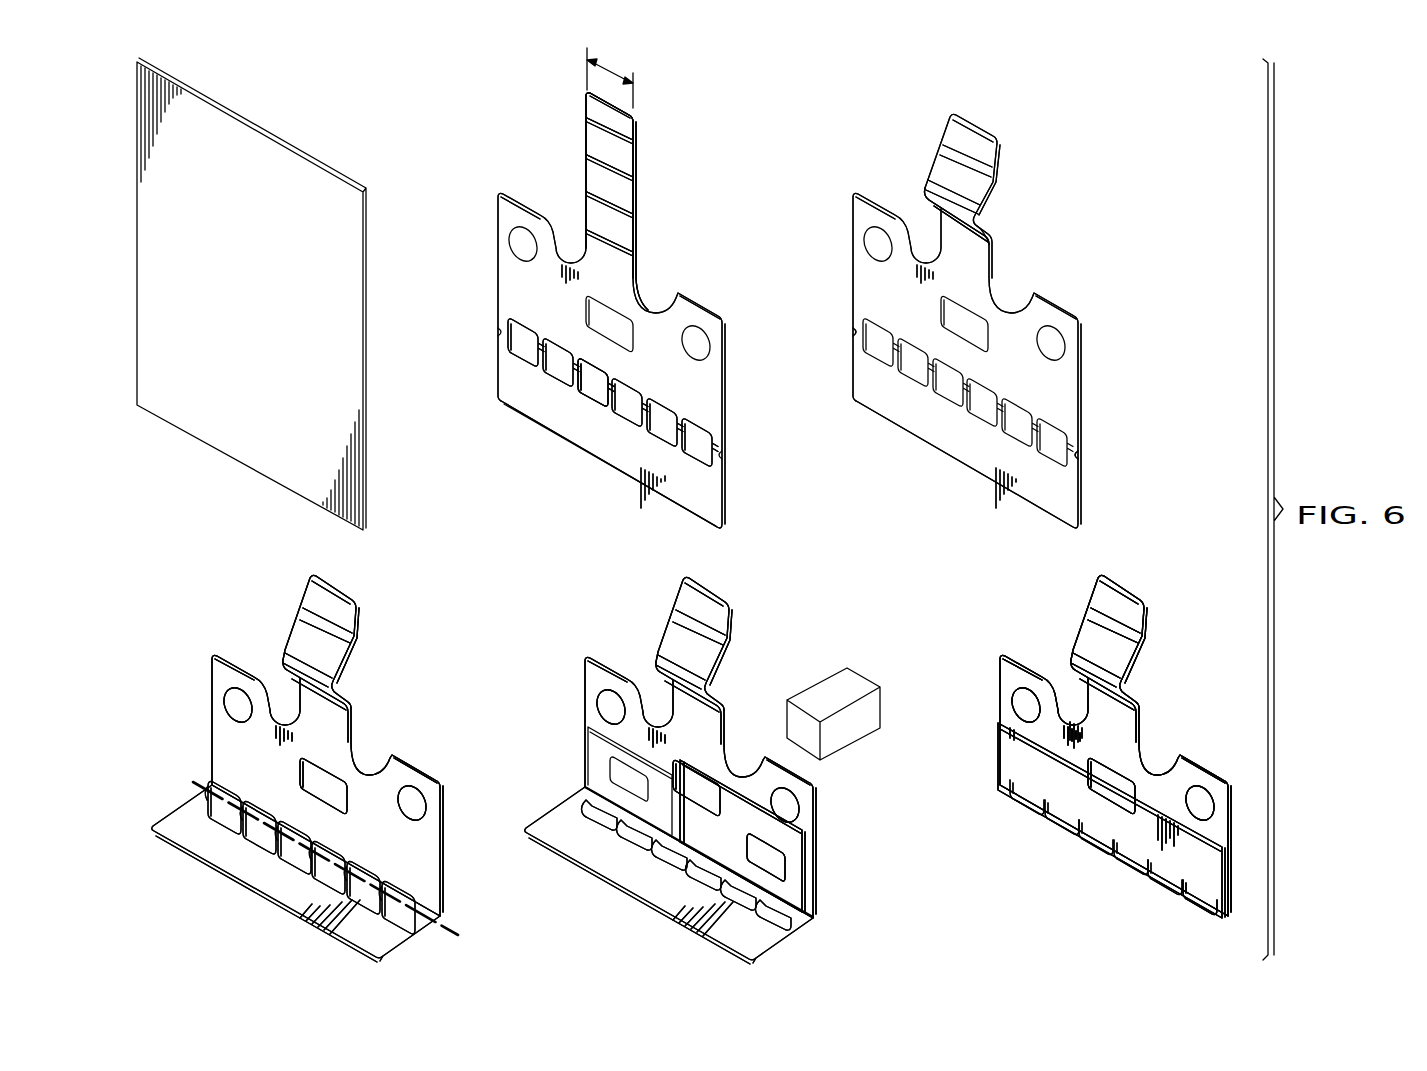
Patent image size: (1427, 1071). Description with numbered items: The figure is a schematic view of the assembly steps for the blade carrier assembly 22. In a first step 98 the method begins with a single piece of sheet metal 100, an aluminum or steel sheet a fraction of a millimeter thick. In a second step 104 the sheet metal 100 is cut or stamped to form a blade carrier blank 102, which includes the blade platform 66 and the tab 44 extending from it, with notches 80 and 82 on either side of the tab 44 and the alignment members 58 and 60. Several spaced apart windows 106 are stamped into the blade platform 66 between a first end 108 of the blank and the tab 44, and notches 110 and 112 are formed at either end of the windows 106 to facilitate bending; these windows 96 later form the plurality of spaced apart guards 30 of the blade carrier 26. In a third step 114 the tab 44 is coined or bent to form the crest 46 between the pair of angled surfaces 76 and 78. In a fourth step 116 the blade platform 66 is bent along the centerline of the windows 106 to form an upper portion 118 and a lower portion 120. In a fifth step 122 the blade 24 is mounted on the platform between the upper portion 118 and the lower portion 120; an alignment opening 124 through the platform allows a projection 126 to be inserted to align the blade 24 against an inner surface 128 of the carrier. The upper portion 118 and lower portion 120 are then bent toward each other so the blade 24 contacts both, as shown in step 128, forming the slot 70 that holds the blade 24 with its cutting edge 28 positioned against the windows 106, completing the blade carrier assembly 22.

The blade carrier assembly 22 is at (1093, 770).
The blade 24 is at (800, 893).
The blade carrier 26 is at (1005, 740).
The cutting edge 28 is at (633, 838).
The spaced apart guards 30 is at (557, 370).
The tab 44 is at (595, 160).
The crest 46 is at (980, 226).
The alignment member 58 is at (523, 246).
The alignment member 60 is at (692, 356).
The blade platform 66 is at (500, 270).
The slot 70 is at (1235, 895).
The angled surface 76 is at (950, 146).
The angled surface 78 is at (930, 198).
The notch 80 is at (556, 210).
The notch 82 is at (661, 272).
The windows 96 is at (1042, 838).
The first step 98 is at (256, 468).
The sheet metal 100 is at (255, 294).
The blade carrier blank 102 is at (628, 173).
The second step 104 is at (607, 306).
The window 106 is at (640, 416).
The first end 108 is at (704, 524).
The notch 110 is at (497, 333).
The notch 112 is at (728, 457).
The third step 114 is at (963, 313).
The fourth step 116 is at (193, 902).
The upper portion 118 is at (172, 822).
The lower portion 120 is at (200, 737).
The fifth step 122 is at (702, 770).
The alignment opening 124 is at (705, 782).
The projection 126 is at (820, 690).
The step 128 is at (815, 822).